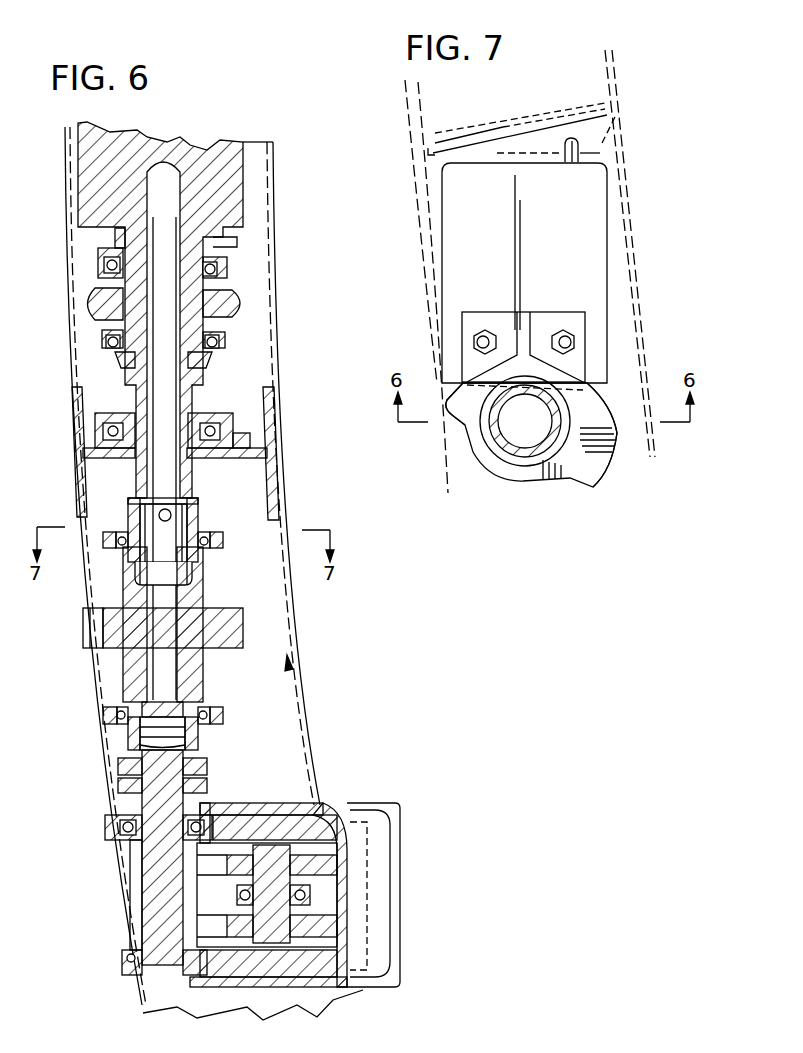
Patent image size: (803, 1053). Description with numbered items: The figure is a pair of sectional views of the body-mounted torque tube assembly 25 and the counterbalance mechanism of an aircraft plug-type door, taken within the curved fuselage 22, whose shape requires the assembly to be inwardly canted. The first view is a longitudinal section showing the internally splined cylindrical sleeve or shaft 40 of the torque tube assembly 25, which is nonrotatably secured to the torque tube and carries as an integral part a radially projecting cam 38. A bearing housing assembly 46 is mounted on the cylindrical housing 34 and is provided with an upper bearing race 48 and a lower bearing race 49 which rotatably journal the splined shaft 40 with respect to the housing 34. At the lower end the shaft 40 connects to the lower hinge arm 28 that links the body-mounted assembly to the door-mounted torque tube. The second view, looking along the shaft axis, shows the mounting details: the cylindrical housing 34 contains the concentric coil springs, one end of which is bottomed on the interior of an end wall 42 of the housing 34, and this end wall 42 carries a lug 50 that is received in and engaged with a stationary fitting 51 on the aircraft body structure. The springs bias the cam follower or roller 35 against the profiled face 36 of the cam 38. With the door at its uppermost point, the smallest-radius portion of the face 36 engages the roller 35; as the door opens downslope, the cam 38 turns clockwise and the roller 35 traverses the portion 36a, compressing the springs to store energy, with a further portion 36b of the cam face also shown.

In FIG. 6, the fuselage 22 is at (62, 298).
In FIG. 7, the fuselage 22 is at (418, 220).
In FIG. 6, the body-mounted torque tube assembly 25 is at (291, 665).
In FIG. 6, the lower hinge arm 28 is at (332, 862).
In FIG. 7, the cylindrical housing 34 is at (600, 227).
In FIG. 6, the cam follower or roller 35 is at (147, 932).
In FIG. 7, the profiled face 36 is at (597, 397).
In FIG. 7, the portion of profiled cam face 36a is at (452, 387).
In FIG. 7, the clamp arm 36b is at (612, 447).
In FIG. 6, the cam 38 is at (85, 628).
In FIG. 7, the cam 38 is at (457, 403).
In FIG. 6, the internally splined cylindrical sleeve or shaft 40 is at (125, 670).
In FIG. 7, the end wall 42 is at (498, 127).
In FIG. 6, the bearing housing assembly 46 is at (223, 538).
In FIG. 7, the bearing housing assembly 46 is at (503, 483).
In FIG. 6, the upper bearing race 48 is at (130, 520).
In FIG. 6, the lower bearing race 49 is at (122, 727).
In FIG. 7, the lug 50 is at (578, 150).
In FIG. 7, the stationary fitting 51 is at (612, 122).